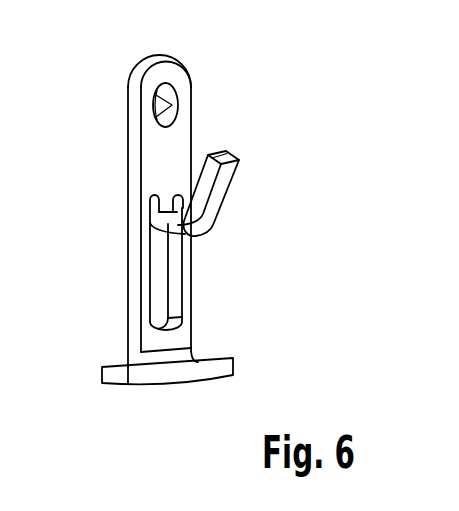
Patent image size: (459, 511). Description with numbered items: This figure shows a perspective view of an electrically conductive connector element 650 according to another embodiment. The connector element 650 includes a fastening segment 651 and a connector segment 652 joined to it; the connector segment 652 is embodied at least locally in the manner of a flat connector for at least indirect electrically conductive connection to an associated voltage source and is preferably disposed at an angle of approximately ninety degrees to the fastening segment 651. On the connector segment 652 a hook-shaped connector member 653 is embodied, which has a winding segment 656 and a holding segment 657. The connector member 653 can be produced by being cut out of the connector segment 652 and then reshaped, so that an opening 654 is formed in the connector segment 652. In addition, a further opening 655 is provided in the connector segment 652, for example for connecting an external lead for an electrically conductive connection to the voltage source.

The connector element 650 is at (76, 68).
The fastening segment 651 is at (115, 374).
The connector segment 652 is at (128, 172).
The hook-shaped connector member 653 is at (228, 203).
The opening 654 is at (157, 265).
The further opening 655 is at (160, 107).
The winding segment 656 is at (167, 228).
The holding segment 657 is at (226, 154).